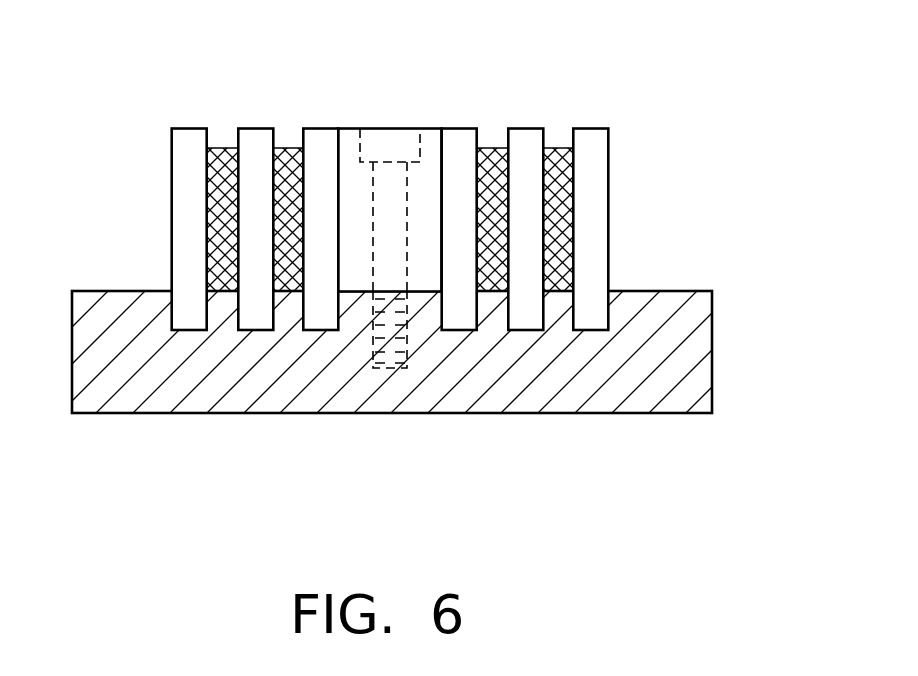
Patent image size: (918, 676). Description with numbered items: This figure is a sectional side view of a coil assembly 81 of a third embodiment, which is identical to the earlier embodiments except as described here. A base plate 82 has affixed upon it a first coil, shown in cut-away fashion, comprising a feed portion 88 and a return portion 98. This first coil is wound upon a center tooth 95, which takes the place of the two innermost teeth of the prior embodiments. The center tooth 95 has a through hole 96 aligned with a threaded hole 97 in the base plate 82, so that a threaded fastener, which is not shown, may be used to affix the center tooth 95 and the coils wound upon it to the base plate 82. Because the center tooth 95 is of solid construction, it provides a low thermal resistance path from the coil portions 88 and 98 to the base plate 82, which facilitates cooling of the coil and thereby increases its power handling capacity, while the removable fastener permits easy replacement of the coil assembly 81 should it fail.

The coil assembly 81 is at (404, 251).
The base plate 82 is at (712, 380).
The feed portion 88 is at (292, 147).
The center tooth 95 is at (420, 140).
The screw 96 is at (397, 168).
The threaded hole 97 is at (395, 362).
The return portion 98 is at (492, 147).